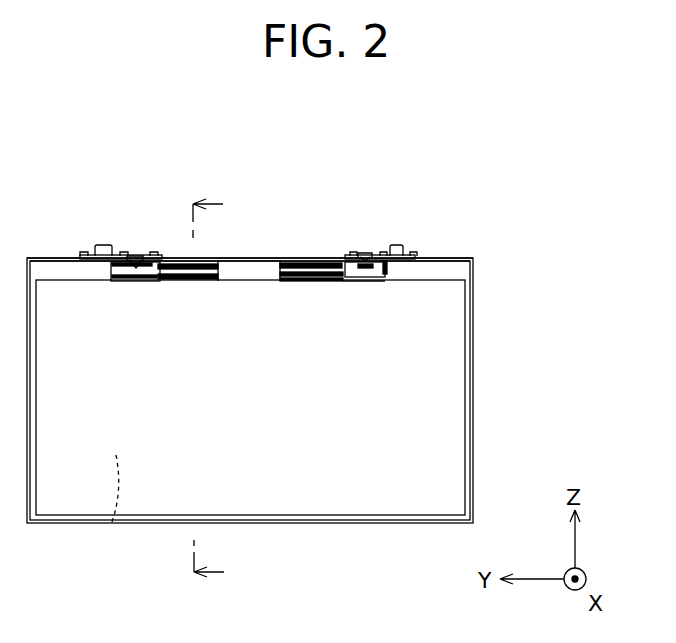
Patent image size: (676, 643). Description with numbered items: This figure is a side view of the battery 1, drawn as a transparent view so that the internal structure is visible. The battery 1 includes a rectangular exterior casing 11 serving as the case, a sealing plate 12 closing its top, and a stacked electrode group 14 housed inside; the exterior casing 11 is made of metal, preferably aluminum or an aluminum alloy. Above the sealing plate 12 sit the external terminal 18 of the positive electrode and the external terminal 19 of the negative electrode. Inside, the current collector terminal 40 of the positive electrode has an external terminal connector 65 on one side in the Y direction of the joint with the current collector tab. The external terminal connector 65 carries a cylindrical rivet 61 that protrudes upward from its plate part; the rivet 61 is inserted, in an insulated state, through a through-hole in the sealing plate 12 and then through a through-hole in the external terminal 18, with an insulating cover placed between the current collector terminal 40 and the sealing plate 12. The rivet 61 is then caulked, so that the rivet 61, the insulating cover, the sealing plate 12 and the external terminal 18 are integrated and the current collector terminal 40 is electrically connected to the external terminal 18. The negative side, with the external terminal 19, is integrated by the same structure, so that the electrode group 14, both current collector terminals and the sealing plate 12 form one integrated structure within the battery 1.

The battery 1 is at (297, 206).
The exterior casing 11 is at (473, 291).
The sealing plate 12 is at (449, 258).
The electrode group 14 is at (112, 523).
The external terminal of the positive electrode 18 is at (100, 247).
The external terminal of the negative electrode 19 is at (398, 244).
The current collector terminal 40 is at (150, 270).
The rivet 61 is at (141, 264).
The external terminal connector 65 is at (122, 268).